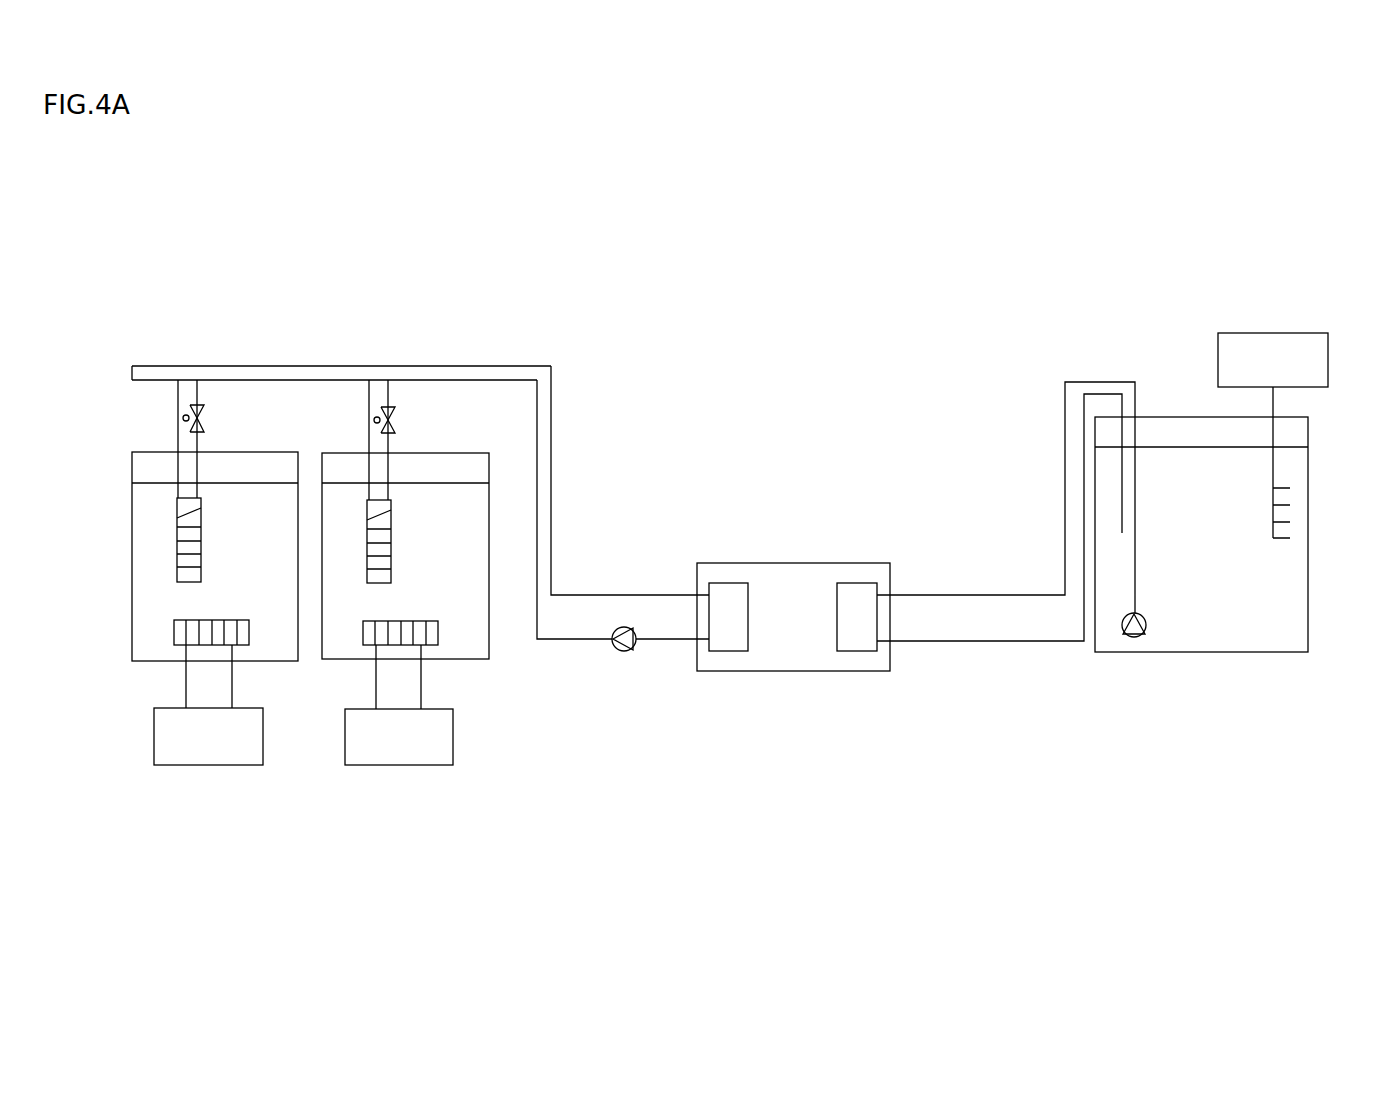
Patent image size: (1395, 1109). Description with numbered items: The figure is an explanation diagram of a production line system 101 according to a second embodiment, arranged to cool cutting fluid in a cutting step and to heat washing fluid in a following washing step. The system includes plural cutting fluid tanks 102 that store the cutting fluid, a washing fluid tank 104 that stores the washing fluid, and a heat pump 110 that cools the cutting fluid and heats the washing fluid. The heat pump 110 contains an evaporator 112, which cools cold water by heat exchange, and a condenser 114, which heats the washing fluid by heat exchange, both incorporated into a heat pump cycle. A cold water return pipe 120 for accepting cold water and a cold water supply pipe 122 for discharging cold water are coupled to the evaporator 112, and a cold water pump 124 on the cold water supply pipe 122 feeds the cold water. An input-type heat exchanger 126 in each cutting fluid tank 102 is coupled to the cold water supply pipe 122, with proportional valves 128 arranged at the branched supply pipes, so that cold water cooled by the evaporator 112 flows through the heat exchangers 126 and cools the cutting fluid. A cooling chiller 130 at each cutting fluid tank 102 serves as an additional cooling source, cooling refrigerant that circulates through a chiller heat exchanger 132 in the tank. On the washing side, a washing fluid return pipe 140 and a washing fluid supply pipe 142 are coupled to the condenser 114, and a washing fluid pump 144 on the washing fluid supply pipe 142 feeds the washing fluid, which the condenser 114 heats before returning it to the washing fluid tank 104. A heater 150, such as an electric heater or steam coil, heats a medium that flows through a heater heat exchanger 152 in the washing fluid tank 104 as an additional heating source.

The production line system 101 is at (270, 221).
The cutting fluid tank 102 is at (280, 661).
The washing fluid tank 104 is at (1277, 652).
The heat pump 110 is at (811, 545).
The evaporator 112 is at (722, 583).
The condenser 114 is at (858, 583).
The cold water return pipe 120 is at (633, 595).
The cold water supply pipe 122 is at (565, 641).
The cold water pump 124 is at (634, 651).
The heat exchanger 126 is at (177, 545).
The proportional valve 128 is at (206, 416).
The cooling chiller 130 is at (210, 766).
The chiller heat exchanger 132 is at (174, 640).
The washing fluid return pipe 140 is at (980, 641).
The washing fluid supply pipe 142 is at (970, 595).
The washing fluid pump 144 is at (1140, 637).
The heater 150 is at (1271, 333).
The heater heat exchanger 152 is at (1277, 488).